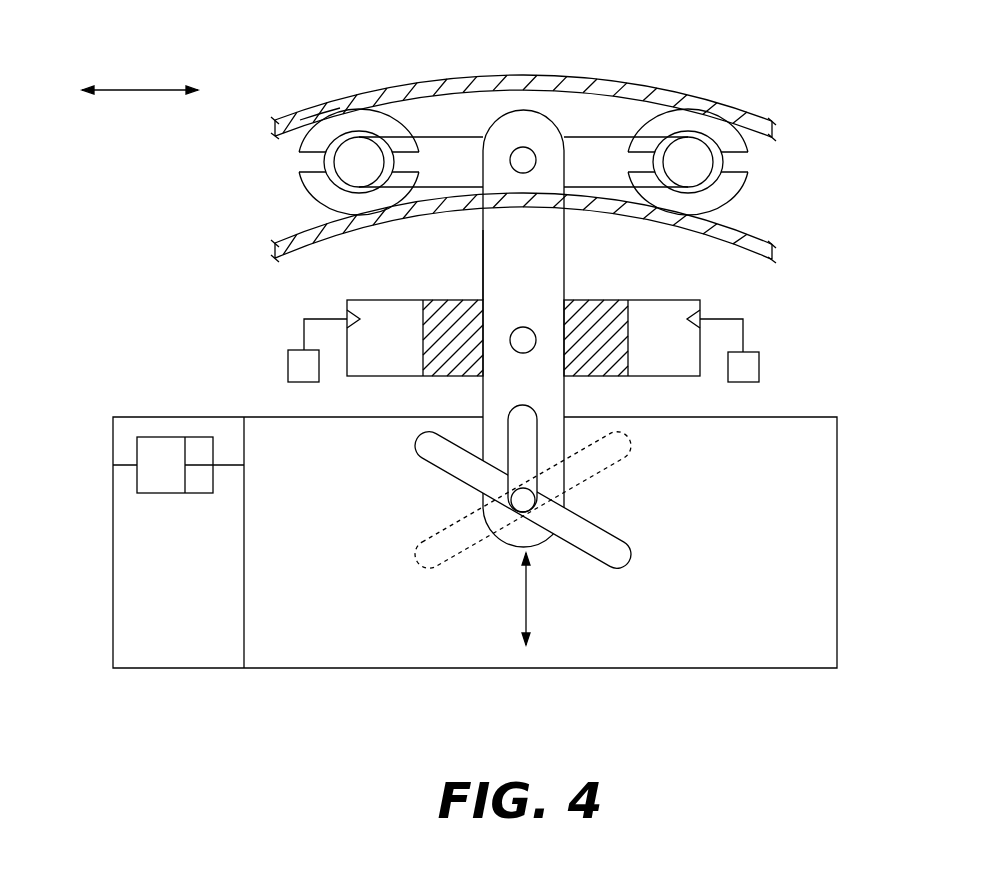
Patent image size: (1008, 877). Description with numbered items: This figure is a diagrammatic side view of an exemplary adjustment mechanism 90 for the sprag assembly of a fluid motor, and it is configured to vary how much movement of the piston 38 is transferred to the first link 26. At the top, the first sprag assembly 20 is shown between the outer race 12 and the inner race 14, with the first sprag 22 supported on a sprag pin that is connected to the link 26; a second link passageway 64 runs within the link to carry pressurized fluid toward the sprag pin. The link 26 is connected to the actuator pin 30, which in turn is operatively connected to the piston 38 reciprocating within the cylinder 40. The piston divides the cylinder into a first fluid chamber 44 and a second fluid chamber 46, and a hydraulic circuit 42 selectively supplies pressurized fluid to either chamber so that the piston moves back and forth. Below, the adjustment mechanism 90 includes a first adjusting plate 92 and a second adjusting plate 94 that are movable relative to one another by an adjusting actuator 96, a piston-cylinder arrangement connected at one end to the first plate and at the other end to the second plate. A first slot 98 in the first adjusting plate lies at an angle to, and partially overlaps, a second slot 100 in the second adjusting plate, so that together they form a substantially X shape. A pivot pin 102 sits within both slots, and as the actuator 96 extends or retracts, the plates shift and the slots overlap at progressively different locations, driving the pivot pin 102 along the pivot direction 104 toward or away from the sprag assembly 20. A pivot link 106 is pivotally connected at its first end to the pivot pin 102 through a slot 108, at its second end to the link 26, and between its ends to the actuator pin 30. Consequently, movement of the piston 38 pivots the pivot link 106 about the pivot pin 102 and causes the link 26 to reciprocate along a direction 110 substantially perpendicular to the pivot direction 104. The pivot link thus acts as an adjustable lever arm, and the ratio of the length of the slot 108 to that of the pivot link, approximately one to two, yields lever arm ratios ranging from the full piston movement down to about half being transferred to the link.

The outer race 12 is at (718, 112).
The inner race 14 is at (760, 244).
The first sprag assembly 20 is at (705, 84).
The first sprag 22 is at (323, 130).
The first link 26 is at (452, 144).
The actuator pin 30 is at (534, 329).
The piston 38 is at (444, 300).
The cylinder 40 is at (371, 300).
The hydraulic circuit 42 is at (288, 368).
The first fluid chamber 44 is at (370, 350).
The second fluid chamber 46 is at (648, 350).
The second link passageway 64 is at (347, 163).
The adjustment mechanism 90 is at (150, 370).
The first adjusting plate 92 is at (308, 617).
The second adjusting plate 94 is at (185, 616).
The adjusting actuator 96 is at (162, 494).
The first slot 98 is at (625, 527).
The second slot 100 is at (642, 440).
The pivot pin 102 is at (500, 520).
The pivot direction 104 is at (527, 593).
The pivot link 106 is at (527, 242).
The slot 108 is at (508, 443).
The direction 110 is at (139, 90).